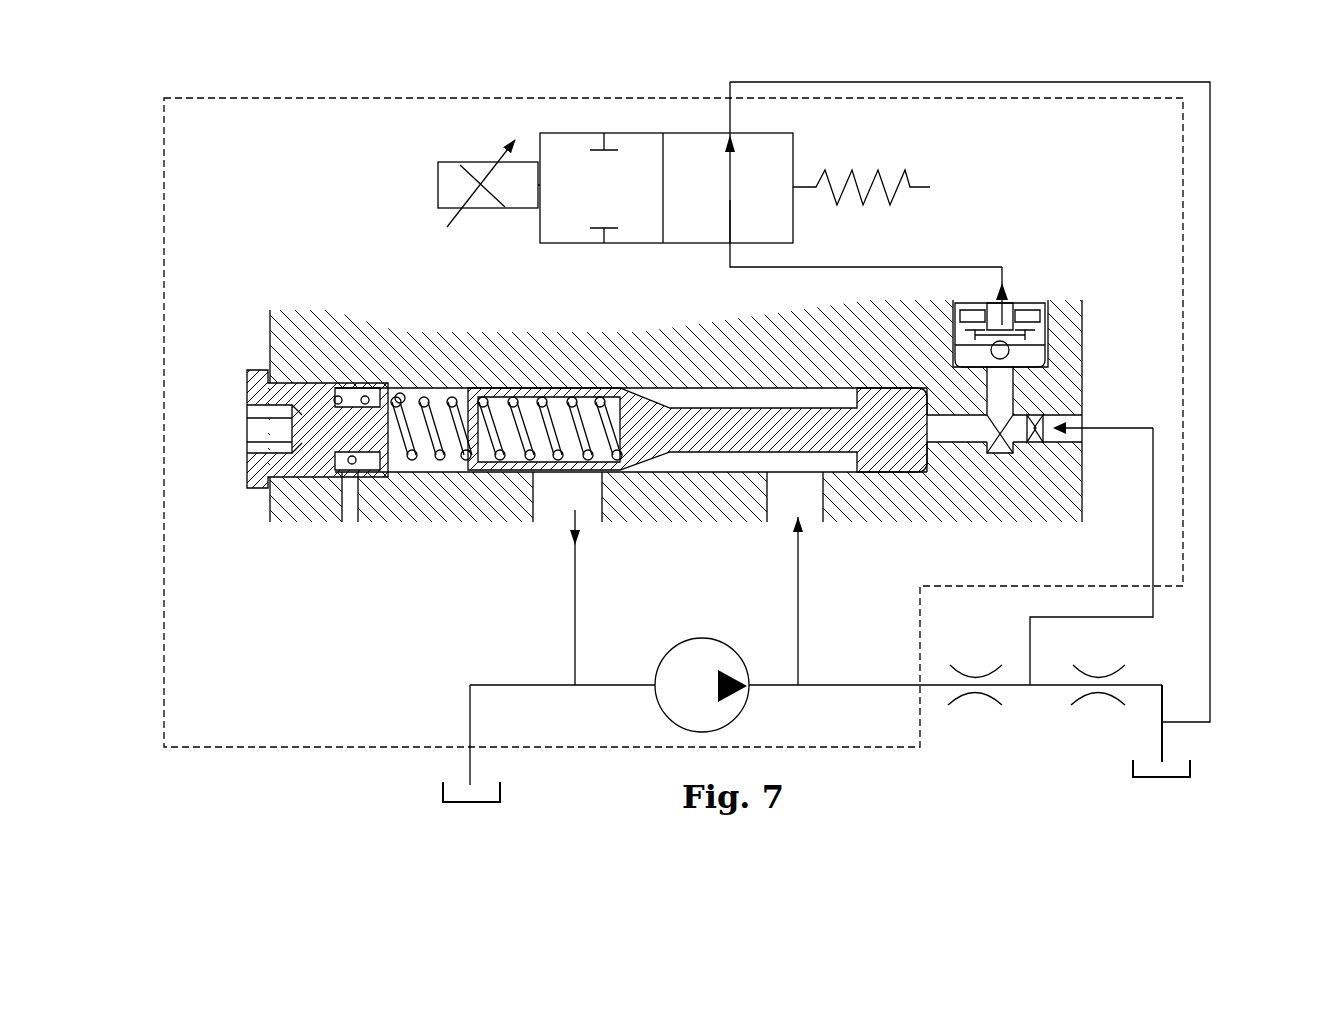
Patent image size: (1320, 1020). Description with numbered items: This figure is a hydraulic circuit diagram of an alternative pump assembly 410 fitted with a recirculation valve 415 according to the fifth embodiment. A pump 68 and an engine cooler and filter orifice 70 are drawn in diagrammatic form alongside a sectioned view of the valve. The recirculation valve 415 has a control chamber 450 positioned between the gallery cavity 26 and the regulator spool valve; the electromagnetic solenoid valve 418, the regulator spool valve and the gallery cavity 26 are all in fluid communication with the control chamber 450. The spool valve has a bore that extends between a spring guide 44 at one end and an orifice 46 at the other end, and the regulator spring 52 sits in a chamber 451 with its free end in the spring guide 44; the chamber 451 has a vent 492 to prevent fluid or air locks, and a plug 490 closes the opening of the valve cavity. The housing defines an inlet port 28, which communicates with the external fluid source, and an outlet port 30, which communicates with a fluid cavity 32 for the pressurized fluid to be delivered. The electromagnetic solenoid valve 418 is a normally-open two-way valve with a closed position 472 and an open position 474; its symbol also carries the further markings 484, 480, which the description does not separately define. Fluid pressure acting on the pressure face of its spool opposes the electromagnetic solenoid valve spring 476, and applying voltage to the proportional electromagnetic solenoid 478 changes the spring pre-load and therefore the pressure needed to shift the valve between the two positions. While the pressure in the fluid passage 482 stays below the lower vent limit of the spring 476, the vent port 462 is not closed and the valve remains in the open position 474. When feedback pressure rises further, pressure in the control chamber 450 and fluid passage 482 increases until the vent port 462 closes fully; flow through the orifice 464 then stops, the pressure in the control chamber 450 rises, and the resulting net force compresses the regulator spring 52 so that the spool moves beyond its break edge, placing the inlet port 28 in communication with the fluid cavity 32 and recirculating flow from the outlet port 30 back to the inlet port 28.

The pump assembly 410 is at (163, 223).
The recirculation valve 415 is at (973, 223).
The electromagnetic solenoid valve 418 is at (430, 182).
The proportional electromagnetic solenoid 478 is at (490, 210).
The closed position 472 is at (573, 253).
The open position 474 is at (687, 253).
The pilot valve first position 484 is at (755, 150).
The pilot valve second position 480 is at (755, 221).
The electromagnetic solenoid valve spring 476 is at (910, 180).
The fluid passage 482 is at (1007, 313).
The vent port 462 is at (1027, 317).
The orifice 464 is at (1002, 338).
The orifice 46 is at (1036, 426).
The gallery cavity 26 is at (1080, 422).
The control chamber 450 is at (963, 430).
The chamber 451 is at (400, 394).
The regulator spring 52 is at (425, 400).
The spring guide 44 is at (485, 458).
The fluid cavity 32 is at (693, 456).
The inlet port 28 is at (555, 510).
The outlet port 30 is at (812, 512).
The vent 492 is at (350, 516).
The plug 490 is at (257, 488).
The pump 68 is at (712, 638).
The engine cooler and filter orifice 70 is at (968, 695).